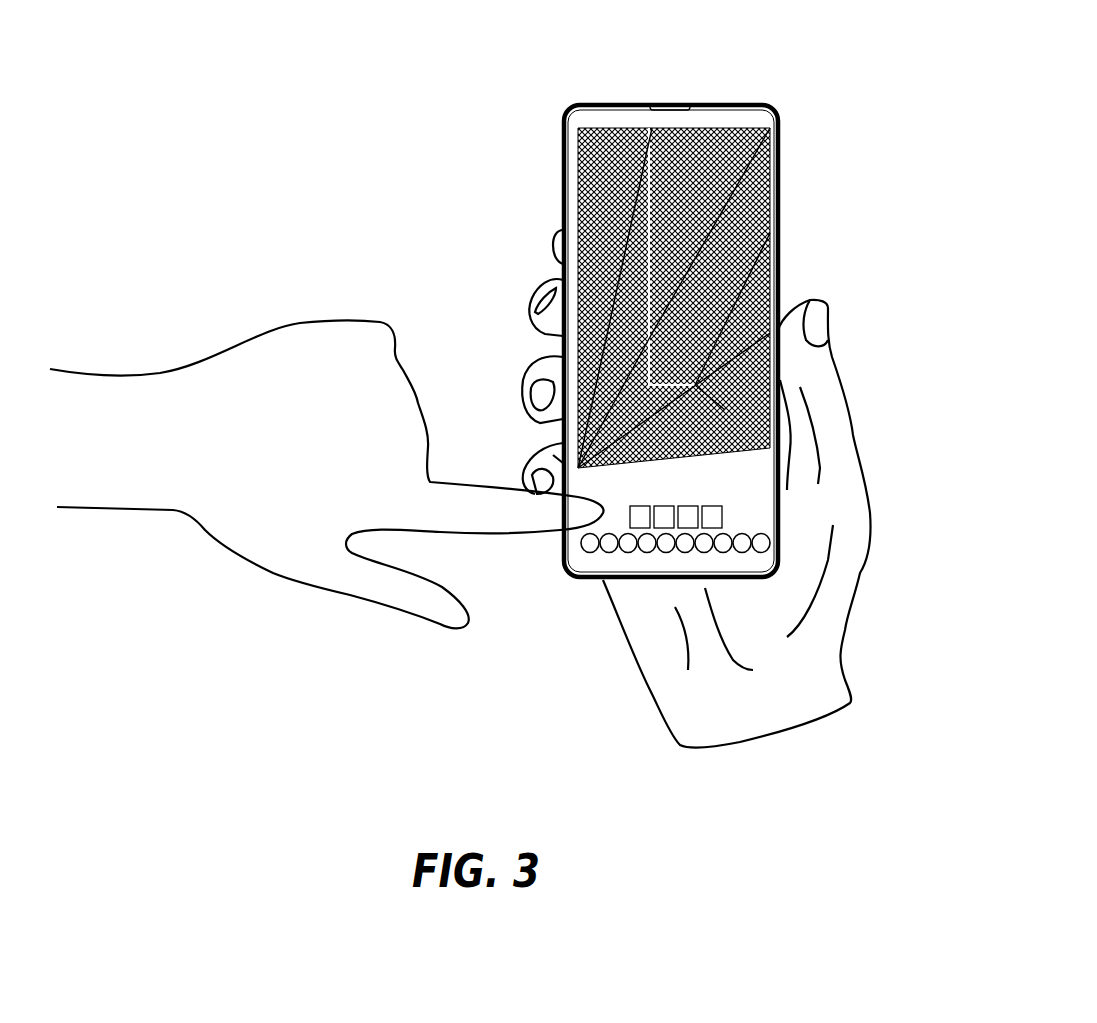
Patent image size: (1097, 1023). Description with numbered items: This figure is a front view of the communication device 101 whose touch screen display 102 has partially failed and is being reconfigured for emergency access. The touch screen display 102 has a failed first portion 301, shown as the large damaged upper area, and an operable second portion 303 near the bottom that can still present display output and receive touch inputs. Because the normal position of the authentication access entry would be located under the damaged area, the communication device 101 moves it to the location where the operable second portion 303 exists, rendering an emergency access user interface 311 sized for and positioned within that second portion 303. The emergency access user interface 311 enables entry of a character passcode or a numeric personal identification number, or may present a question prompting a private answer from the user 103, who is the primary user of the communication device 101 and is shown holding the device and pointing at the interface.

The communication device 101 is at (768, 103).
The touch screen display 102 is at (583, 118).
The user 103 is at (658, 697).
The failed first portion 301 is at (620, 218).
The operable second portion 303 is at (603, 473).
The emergency access user interface 311 is at (629, 561).